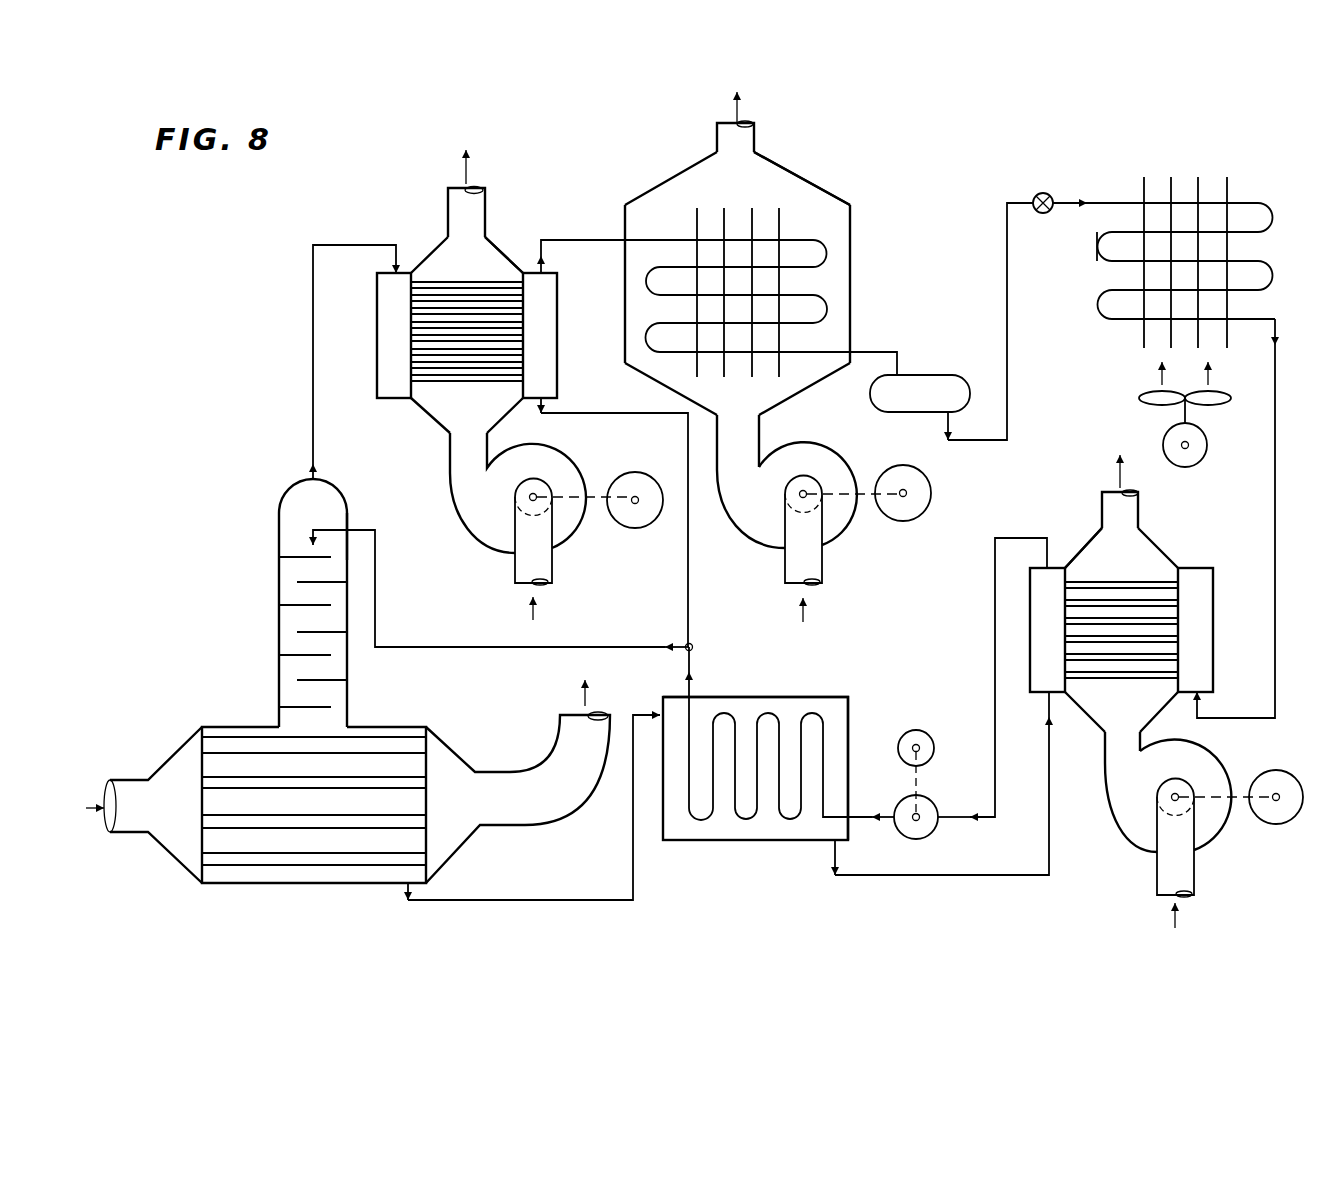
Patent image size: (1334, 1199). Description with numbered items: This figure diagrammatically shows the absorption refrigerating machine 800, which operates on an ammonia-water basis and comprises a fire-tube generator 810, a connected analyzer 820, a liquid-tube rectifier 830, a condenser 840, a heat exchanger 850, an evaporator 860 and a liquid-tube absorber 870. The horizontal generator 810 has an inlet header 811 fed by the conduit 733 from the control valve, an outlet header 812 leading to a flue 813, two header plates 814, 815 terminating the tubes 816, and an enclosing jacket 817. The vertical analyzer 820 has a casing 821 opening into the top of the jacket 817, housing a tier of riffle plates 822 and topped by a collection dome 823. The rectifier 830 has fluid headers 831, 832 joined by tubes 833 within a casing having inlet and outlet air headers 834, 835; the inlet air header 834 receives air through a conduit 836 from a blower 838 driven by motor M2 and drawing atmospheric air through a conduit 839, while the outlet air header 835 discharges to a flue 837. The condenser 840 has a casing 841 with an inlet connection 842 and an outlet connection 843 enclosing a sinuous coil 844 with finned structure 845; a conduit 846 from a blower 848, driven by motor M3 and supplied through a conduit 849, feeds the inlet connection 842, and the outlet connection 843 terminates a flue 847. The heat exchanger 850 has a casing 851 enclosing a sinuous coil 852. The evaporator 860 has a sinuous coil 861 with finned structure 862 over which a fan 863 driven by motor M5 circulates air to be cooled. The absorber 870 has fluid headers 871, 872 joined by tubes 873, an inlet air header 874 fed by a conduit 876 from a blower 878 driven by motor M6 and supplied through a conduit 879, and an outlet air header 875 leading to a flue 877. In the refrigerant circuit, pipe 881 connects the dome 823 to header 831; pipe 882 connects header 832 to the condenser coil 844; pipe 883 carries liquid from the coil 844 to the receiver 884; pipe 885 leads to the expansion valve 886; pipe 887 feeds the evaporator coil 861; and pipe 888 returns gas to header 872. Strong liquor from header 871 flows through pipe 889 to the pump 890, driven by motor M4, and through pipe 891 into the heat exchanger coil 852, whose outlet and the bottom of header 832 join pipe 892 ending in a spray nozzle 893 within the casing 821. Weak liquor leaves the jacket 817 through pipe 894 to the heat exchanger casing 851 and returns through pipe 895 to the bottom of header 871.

The conduit 733 is at (130, 835).
The absorption refrigerating machine 800 is at (293, 493).
The generator 810 is at (224, 725).
The inlet header 811 is at (156, 805).
The outlet header 812 is at (475, 805).
The flue 813 is at (555, 748).
The header plate 814 is at (204, 806).
The header plate 815 is at (425, 802).
The tubes 816 is at (376, 780).
The jacket 817 is at (362, 729).
The analyzer 820 is at (277, 594).
The casing 821 is at (350, 518).
The riffle plates 822 is at (328, 608).
The collection dome 823 is at (325, 492).
The rectifier 830 is at (435, 243).
The fluid header 831 is at (385, 328).
The fluid header 832 is at (557, 333).
The tubes 833 is at (463, 292).
The inlet air header 834 is at (428, 420).
The outlet air header 835 is at (488, 243).
The conduit 836 is at (448, 450).
The flue 837 is at (482, 208).
The blower 838 is at (480, 513).
The conduit 839 is at (515, 575).
The condenser 840 is at (820, 178).
The casing 841 is at (852, 285).
The inlet connection 842 is at (826, 376).
The outlet connection 843 is at (775, 160).
The sinuous coil 844 is at (656, 275).
The finned structure 845 is at (698, 213).
The conduit 846 is at (755, 436).
The flue 847 is at (712, 136).
The blower 848 is at (848, 522).
The conduit 849 is at (785, 572).
The heat exchanger 850 is at (810, 692).
The casing 851 is at (768, 848).
The sinuous coil 852 is at (710, 838).
The evaporator 860 is at (1182, 164).
The sinuous coil 861 is at (1097, 247).
The finned structure 862 is at (1142, 343).
The fan 863 is at (1140, 400).
The absorber 870 is at (1166, 551).
The fluid header 871 is at (1040, 645).
The fluid header 872 is at (1205, 630).
The tubes 873 is at (1113, 595).
The inlet air header 874 is at (1082, 715).
The outlet air header 875 is at (1088, 535).
The conduit 876 is at (1110, 768).
The flue 877 is at (1140, 505).
The blower 878 is at (1128, 842).
The conduit 879 is at (1196, 862).
The pipe 881 is at (308, 293).
The pipe 882 is at (598, 243).
The pipe 883 is at (885, 347).
The receiver 884 is at (900, 413).
The pipe 885 is at (968, 440).
The expansion valve 886 is at (1048, 194).
The pipe 887 is at (1066, 206).
The pipe 888 is at (1276, 590).
The pipe 889 is at (995, 690).
The pump 890 is at (938, 835).
The pipe 891 is at (852, 820).
The pipe 892 is at (562, 416).
The spray nozzle 893 is at (300, 530).
The pipe 894 is at (400, 895).
The pipe 895 is at (888, 875).
The drive motor M2 is at (645, 528).
The drive motor M3 is at (922, 508).
The electric drive motor M4 is at (932, 742).
The electric motor M5 is at (1202, 450).
The drive motor M6 is at (1290, 820).